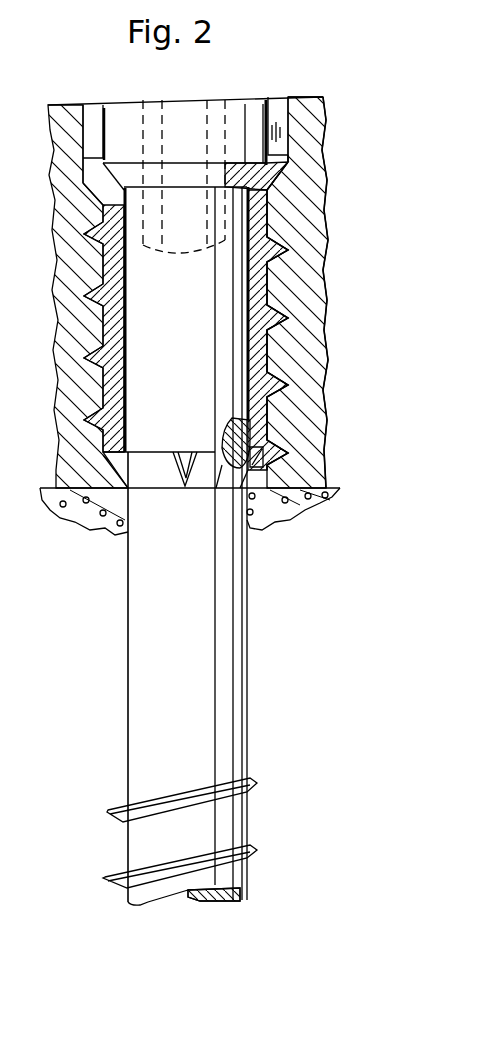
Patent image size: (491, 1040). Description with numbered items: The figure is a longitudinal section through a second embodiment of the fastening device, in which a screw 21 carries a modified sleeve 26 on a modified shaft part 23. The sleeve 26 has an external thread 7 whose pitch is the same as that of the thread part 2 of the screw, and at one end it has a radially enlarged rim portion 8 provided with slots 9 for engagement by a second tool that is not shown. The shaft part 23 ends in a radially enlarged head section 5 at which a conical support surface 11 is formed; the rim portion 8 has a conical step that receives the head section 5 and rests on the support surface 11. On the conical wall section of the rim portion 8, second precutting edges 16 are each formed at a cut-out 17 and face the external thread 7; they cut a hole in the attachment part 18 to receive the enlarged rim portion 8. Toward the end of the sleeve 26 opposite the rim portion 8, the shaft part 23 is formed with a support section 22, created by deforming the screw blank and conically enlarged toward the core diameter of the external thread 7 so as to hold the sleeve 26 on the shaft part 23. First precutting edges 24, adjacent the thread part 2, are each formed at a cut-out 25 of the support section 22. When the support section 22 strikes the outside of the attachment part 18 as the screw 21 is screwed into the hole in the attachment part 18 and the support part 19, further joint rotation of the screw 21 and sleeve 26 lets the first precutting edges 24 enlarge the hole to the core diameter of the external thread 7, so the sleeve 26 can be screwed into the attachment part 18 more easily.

The thread part 2 is at (130, 787).
The head section 5 is at (130, 112).
The external thread 7 is at (283, 375).
The rim portion 8 is at (290, 160).
The slots 9 is at (276, 106).
The conical support surface 11 is at (100, 178).
The second precutting edges 16 is at (322, 208).
The cut-out 17 is at (318, 181).
The attachment part 18 is at (310, 289).
The support part 19 is at (294, 500).
The screw 21 is at (127, 657).
The support section 22 is at (130, 467).
The shaft part 23 is at (140, 302).
The first precutting edges 24 is at (193, 452).
The cut-out 25 is at (173, 490).
The sleeve 26 is at (260, 338).